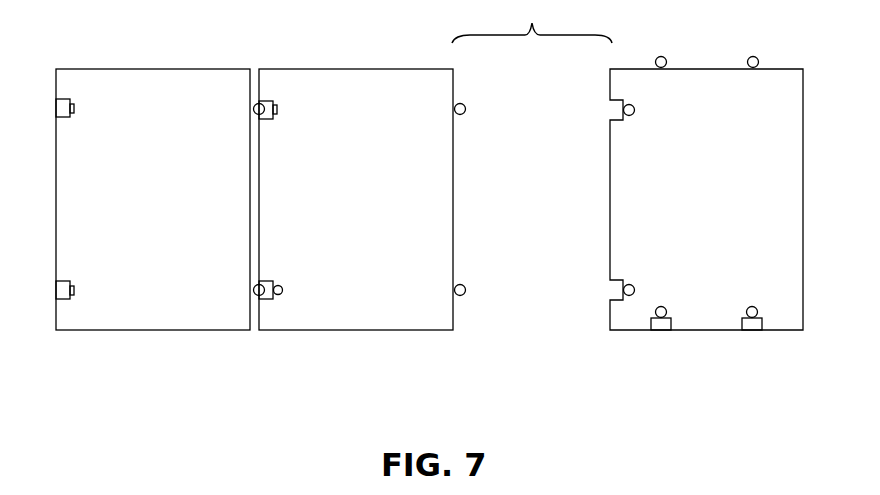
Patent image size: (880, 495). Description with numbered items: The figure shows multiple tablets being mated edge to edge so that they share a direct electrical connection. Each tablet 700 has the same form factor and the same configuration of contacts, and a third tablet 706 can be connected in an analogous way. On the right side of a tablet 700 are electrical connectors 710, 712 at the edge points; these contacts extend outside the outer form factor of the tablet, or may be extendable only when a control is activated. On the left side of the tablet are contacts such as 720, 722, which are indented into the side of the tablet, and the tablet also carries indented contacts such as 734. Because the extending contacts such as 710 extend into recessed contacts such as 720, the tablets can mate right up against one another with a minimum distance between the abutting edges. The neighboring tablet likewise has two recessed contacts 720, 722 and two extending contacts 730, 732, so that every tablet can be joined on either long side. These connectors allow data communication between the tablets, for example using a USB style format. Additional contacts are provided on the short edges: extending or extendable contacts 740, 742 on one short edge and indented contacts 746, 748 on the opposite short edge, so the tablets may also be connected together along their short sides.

The tablet 700 is at (86, 68).
The third tablet 706 is at (785, 69).
The electrical connector 710 is at (252, 110).
The electrical connector 712 is at (252, 291).
The recessed contact 720 is at (279, 110).
The recessed contact 722 is at (284, 290).
The extending contact 730 is at (467, 109).
The extending contact 732 is at (467, 289).
The indented contact 734 is at (74, 109).
The extending contact 740 is at (664, 57).
The extending contact 742 is at (755, 57).
The indented contact 746 is at (660, 331).
The indented contact 748 is at (752, 331).